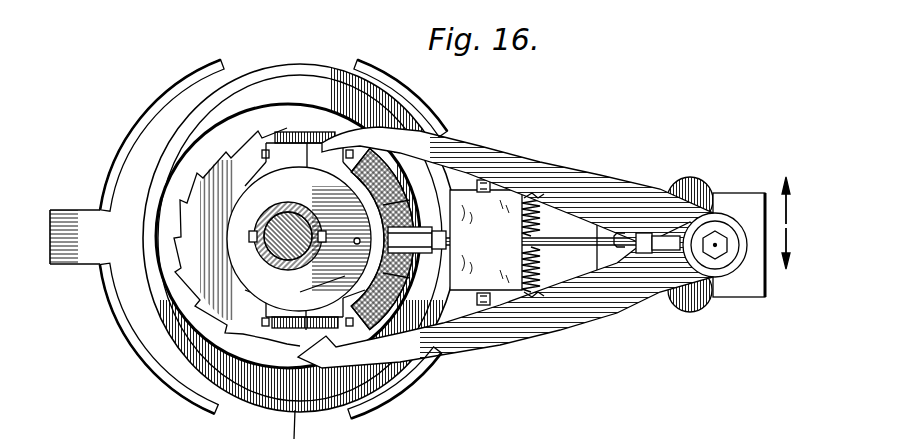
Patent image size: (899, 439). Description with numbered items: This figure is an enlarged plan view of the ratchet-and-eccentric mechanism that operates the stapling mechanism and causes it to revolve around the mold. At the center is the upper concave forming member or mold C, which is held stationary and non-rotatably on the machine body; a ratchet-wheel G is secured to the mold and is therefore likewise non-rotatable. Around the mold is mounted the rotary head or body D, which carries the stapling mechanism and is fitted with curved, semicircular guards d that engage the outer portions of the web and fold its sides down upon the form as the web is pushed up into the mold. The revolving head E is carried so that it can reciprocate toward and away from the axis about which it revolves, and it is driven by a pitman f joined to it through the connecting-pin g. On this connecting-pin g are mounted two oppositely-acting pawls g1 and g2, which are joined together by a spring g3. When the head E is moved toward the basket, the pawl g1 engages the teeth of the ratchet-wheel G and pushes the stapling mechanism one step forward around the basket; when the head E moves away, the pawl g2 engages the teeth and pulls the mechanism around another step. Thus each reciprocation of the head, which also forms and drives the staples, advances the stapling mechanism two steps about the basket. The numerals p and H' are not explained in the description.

The rotary head or body D is at (68, 210).
The curved guards d is at (182, 78).
The ratchet-wheel G is at (281, 132).
The upper concave forming member or mold C is at (307, 230).
The eccentric disk p is at (313, 228).
The hub plate H' is at (322, 281).
The connecting-pin g is at (714, 241).
The pawl g1 is at (597, 197).
The pawl g2 is at (578, 315).
The spring g3 is at (540, 200).
The pitman f is at (553, 246).
The revolving head E is at (733, 287).